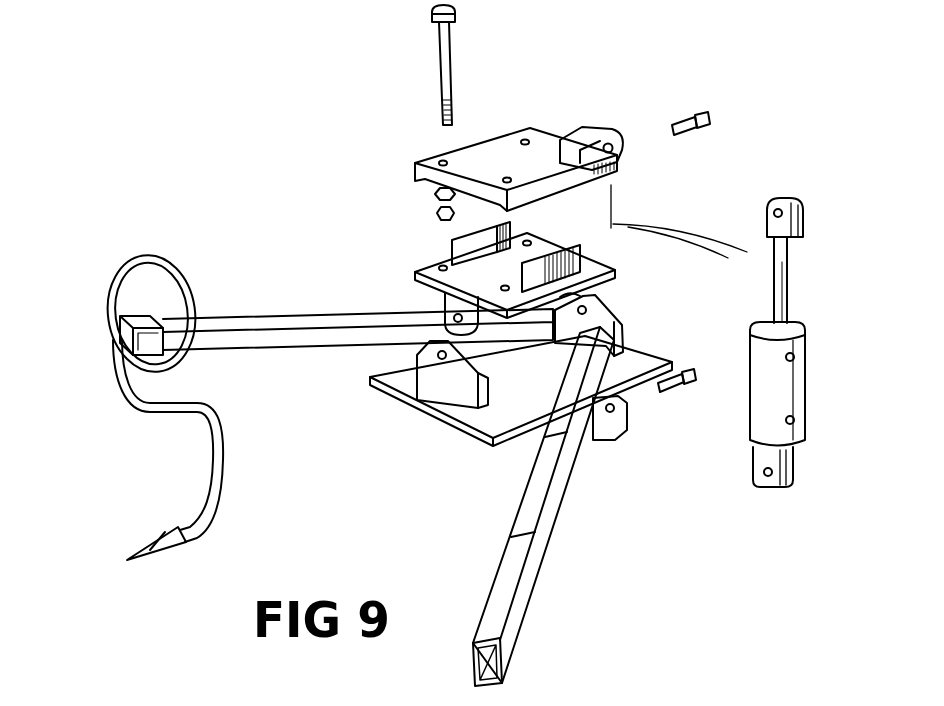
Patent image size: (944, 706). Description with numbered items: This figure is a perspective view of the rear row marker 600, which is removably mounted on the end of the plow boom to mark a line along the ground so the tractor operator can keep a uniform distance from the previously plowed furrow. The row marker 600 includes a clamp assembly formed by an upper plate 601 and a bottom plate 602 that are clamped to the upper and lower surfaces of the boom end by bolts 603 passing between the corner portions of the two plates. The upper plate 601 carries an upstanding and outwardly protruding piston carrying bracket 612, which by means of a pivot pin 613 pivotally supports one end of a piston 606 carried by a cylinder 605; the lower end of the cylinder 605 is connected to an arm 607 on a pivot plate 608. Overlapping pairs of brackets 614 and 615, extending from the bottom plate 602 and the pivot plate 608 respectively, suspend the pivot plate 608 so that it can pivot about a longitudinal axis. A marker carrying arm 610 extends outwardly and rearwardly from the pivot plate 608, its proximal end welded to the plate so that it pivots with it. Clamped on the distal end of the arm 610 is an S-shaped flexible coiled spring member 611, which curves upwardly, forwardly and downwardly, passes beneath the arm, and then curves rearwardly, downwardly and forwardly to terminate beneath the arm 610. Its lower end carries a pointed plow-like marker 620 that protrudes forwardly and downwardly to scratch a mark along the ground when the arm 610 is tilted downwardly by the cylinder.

The row marker 600 is at (320, 175).
The upper plate 601 is at (543, 143).
The bottom plate 602 is at (420, 268).
The bolt 603 is at (440, 70).
The cylinder 605 is at (805, 380).
The piston 606 is at (790, 255).
The arm 607 is at (617, 432).
The pivot plate 608 is at (460, 413).
The marker carrying arm 610 is at (262, 340).
The coiled spring member 611 is at (160, 260).
The piston carrying bracket 612 is at (603, 132).
The pivot pin 613 is at (688, 112).
The bracket 614 is at (443, 300).
The bracket 615 is at (415, 358).
The marker 620 is at (138, 537).